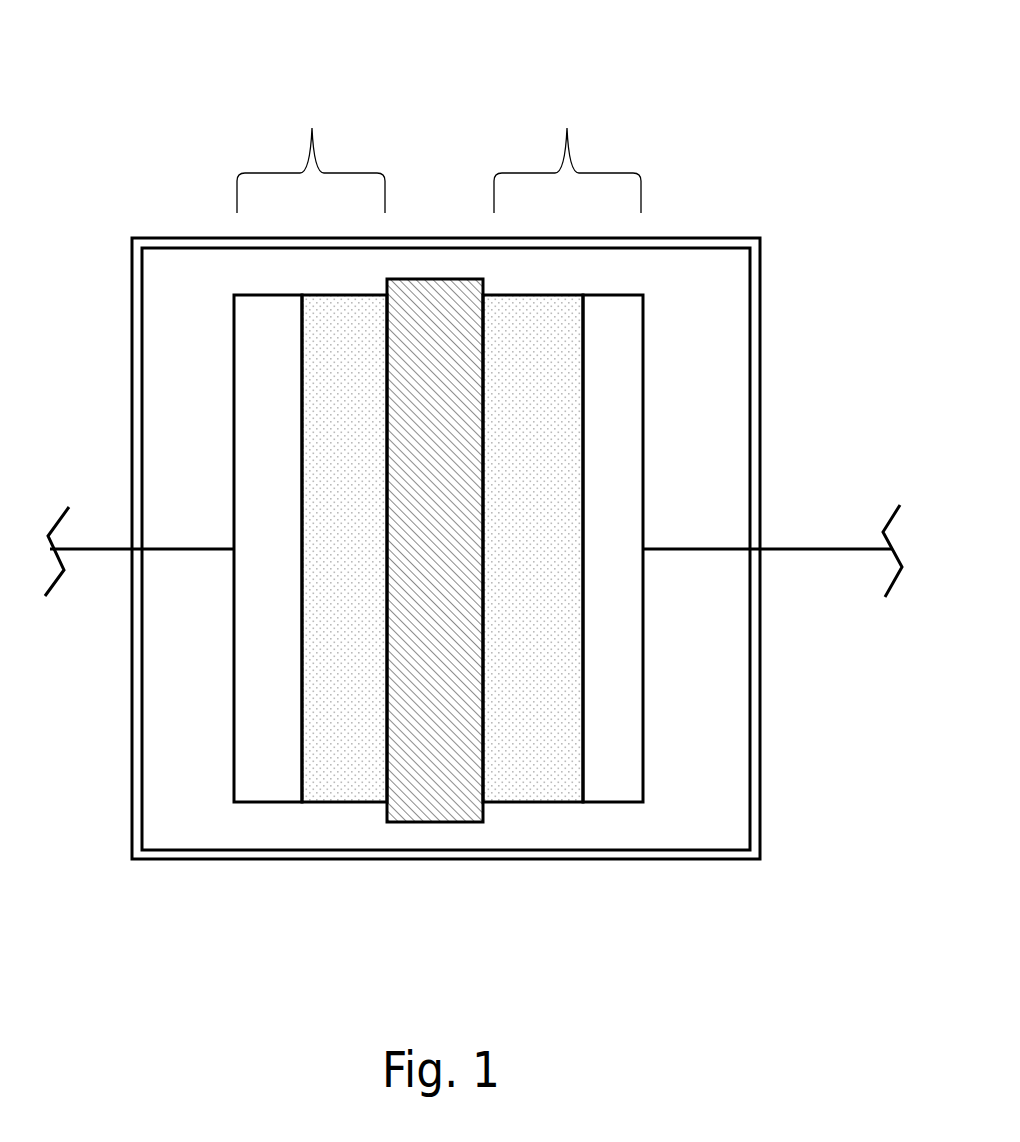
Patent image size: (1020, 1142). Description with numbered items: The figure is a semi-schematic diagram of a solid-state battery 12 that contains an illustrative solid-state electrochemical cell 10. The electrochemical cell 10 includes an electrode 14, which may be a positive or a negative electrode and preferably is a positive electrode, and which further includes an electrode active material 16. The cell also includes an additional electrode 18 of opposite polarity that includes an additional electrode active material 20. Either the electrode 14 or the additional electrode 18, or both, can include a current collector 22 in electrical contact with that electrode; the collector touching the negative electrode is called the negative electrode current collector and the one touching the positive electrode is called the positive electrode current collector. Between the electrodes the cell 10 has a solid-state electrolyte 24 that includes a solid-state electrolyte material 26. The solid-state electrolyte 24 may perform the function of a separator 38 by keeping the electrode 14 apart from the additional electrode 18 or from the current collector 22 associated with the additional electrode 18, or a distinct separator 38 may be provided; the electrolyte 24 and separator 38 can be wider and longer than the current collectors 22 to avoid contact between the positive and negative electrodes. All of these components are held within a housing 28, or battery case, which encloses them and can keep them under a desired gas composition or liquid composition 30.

The solid-state electrochemical cell 10 is at (375, 513).
The battery 12 is at (473, 433).
The electrode 14 is at (311, 150).
The electrode active material 16 is at (340, 803).
The additional electrode 18 is at (567, 150).
The additional electrode active material 20 is at (530, 803).
The current collector 22 is at (265, 803).
The solid-state electrolyte 24 is at (438, 278).
The solid-state electrolyte material 26 is at (413, 822).
The housing 28 is at (204, 238).
The gas composition or liquid composition 30 is at (703, 280).
The separator 38 is at (445, 793).